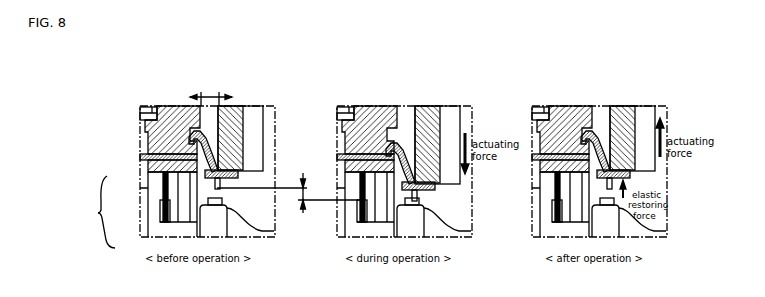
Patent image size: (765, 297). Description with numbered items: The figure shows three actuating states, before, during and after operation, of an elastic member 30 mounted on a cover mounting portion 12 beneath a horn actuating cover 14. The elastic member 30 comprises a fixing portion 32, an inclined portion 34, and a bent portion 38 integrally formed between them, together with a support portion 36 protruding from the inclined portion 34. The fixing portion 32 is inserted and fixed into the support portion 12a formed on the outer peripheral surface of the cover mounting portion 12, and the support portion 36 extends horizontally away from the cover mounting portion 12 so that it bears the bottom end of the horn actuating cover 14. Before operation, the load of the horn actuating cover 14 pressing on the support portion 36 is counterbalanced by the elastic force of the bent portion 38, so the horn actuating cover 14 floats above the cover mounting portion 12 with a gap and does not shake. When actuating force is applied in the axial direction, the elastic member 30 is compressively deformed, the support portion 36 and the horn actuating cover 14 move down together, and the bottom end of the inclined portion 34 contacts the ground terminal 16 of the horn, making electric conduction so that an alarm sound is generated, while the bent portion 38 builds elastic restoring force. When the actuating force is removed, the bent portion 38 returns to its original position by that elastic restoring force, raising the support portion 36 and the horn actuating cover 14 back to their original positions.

The cover mounting portion 12 is at (172, 104).
The support portion 12a is at (154, 148).
The horn actuating cover 14 is at (242, 122).
The ground terminal 16 is at (272, 232).
The elastic member 30 is at (102, 212).
The fixing portion 32 is at (147, 160).
The inclined portion 34 is at (204, 182).
The support portion 36 is at (166, 203).
The bent portion 38 is at (198, 150).